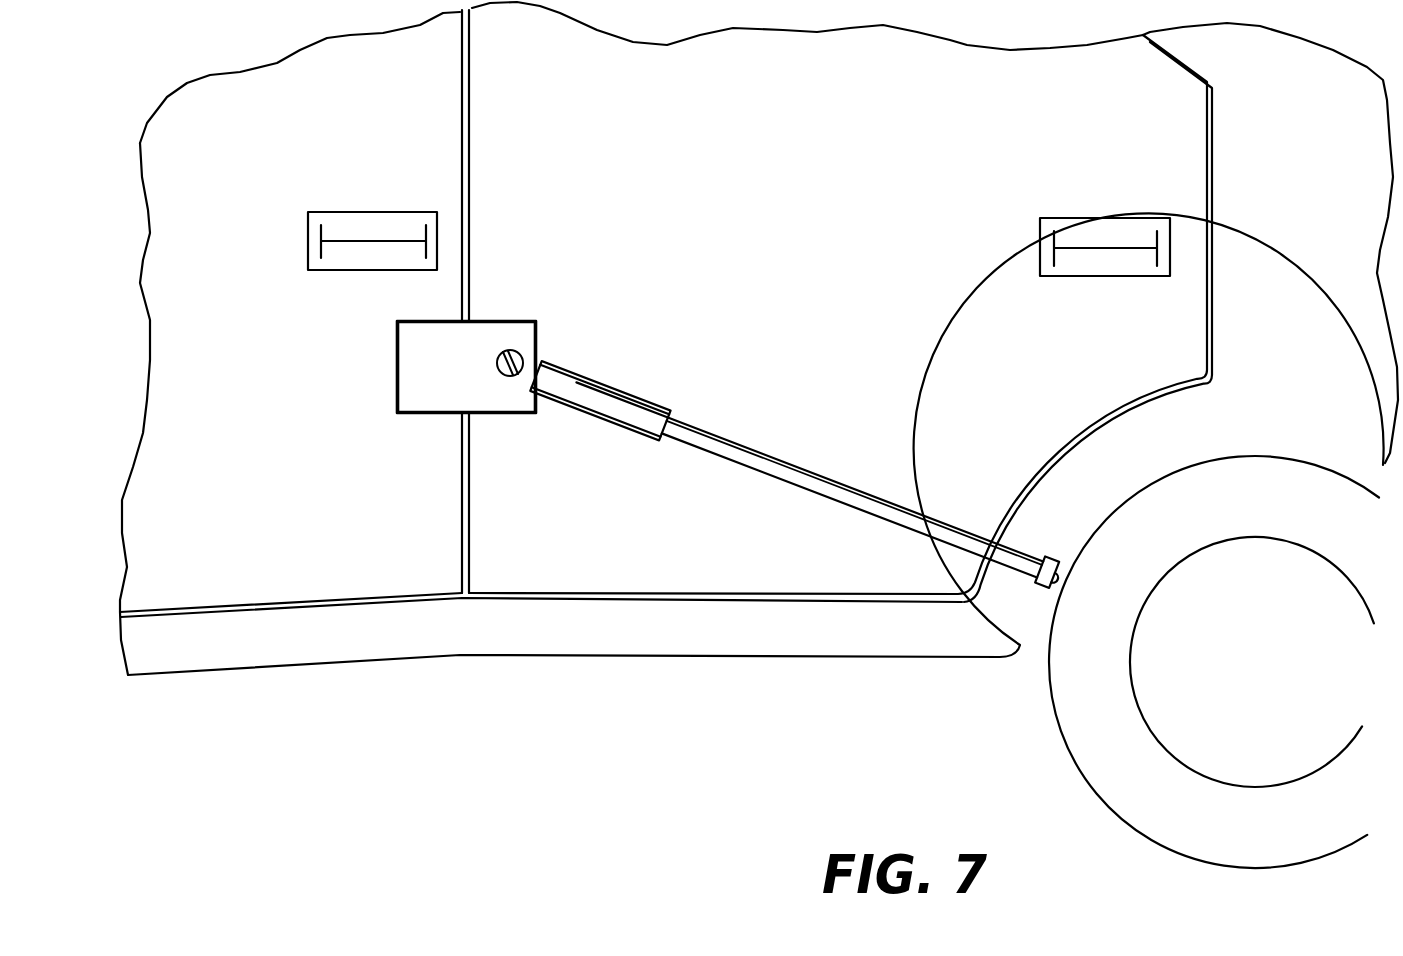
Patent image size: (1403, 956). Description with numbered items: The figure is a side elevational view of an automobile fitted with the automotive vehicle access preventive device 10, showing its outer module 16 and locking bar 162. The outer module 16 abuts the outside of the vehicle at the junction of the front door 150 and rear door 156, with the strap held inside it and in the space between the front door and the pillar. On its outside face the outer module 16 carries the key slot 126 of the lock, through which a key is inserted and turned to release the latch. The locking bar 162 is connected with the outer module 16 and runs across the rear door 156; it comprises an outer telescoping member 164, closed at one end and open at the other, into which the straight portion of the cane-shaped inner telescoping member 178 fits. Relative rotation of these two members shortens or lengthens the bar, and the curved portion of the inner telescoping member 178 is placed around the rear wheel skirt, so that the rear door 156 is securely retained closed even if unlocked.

The automotive vehicle access preventive device 10 is at (398, 417).
The outer module 16 is at (479, 344).
The key slot 126 is at (503, 378).
The front door 150 is at (311, 157).
The rear door 156 is at (731, 160).
The locking bar 162 is at (739, 436).
The outer telescoping member 164 is at (606, 390).
The inner telescoping member 178 is at (838, 483).